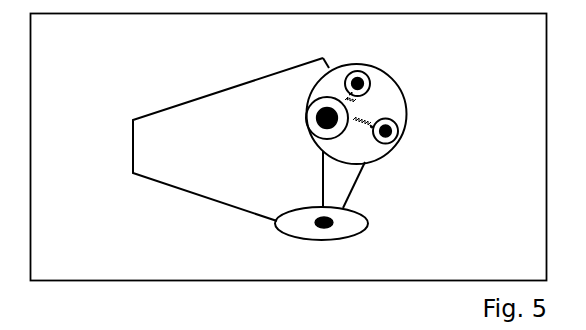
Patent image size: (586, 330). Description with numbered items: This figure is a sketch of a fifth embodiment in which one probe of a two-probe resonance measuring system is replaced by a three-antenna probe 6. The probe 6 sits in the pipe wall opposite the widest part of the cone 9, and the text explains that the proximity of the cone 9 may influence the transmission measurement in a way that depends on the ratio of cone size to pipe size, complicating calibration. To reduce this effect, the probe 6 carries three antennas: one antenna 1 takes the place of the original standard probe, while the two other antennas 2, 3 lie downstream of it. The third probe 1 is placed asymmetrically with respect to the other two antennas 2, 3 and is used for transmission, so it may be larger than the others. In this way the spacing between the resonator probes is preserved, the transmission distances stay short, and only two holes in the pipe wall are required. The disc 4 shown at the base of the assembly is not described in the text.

The third probe 1 is at (317, 107).
The probe 2 is at (357, 71).
The probe 3 is at (392, 141).
The disc 4 is at (331, 223).
The 3-antenna probe 6 is at (363, 114).
The cone 9 is at (249, 139).